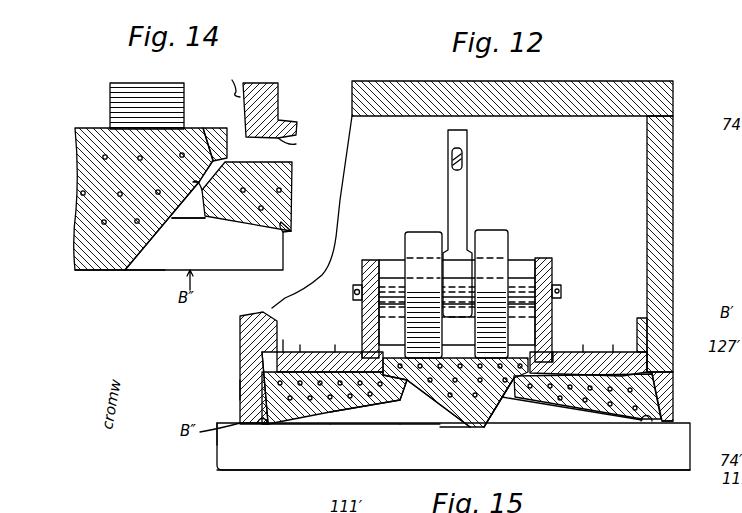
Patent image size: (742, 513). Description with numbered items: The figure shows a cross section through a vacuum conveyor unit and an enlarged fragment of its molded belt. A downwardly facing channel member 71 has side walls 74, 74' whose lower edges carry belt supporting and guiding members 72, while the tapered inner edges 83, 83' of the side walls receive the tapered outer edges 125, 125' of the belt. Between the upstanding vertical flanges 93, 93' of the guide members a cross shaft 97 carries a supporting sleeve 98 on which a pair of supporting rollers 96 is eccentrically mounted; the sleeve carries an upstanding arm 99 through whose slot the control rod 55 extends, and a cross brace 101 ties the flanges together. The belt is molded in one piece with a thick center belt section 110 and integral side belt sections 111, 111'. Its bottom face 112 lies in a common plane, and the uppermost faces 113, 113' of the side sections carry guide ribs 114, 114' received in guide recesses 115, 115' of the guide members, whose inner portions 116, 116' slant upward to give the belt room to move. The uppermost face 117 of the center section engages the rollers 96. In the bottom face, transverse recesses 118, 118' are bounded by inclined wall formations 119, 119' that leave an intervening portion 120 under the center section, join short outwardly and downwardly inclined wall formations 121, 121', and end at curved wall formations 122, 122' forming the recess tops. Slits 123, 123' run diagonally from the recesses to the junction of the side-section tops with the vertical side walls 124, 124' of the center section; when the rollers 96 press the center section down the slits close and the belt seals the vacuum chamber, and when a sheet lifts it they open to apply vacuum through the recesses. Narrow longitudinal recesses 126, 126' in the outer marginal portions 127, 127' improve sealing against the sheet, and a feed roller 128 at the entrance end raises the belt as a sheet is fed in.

In FIG. 12, the control rod 55 is at (463, 158).
In FIG. 12, the channel member 71 is at (673, 127).
In FIG. 14, the belt supporting and guiding member 72 is at (232, 80).
In FIG. 12, the belt supporting and guiding member 72 is at (617, 352).
In FIG. 12, the side wall 74 is at (673, 244).
In FIG. 12, the side wall 74' is at (241, 367).
In FIG. 12, the tapered inner edge 83 is at (678, 390).
In FIG. 12, the tapered inner edge 83' is at (236, 385).
In FIG. 14, the vertical flange 93 is at (271, 101).
In FIG. 12, the vertical flange 93 is at (557, 294).
In FIG. 12, the vertical flange 93' is at (371, 290).
In FIG. 14, the supporting roller 96 is at (118, 83).
In FIG. 12, the supporting roller 96 is at (424, 244).
In FIG. 12, the cross shaft 97 is at (561, 290).
In FIG. 12, the supporting sleeve 98 is at (520, 275).
In FIG. 12, the upstanding arm 99 is at (468, 190).
In FIG. 12, the cross brace 101 is at (394, 262).
In FIG. 14, the center belt section 110 is at (115, 268).
In FIG. 12, the center belt section 110 is at (470, 425).
In FIG. 14, the side belt section 111 is at (267, 196).
In FIG. 12, the side belt section 111 is at (587, 415).
In FIG. 12, the side belt section 111' is at (277, 439).
In FIG. 14, the bottom face 112 is at (150, 268).
In FIG. 12, the bottom face 112 is at (386, 424).
In FIG. 12, the uppermost face 113 is at (594, 332).
In FIG. 12, the uppermost face 113' is at (342, 325).
In FIG. 12, the guide rib 114 is at (681, 354).
In FIG. 12, the guide rib 114' is at (294, 325).
In FIG. 12, the guide recess 115 is at (612, 340).
In FIG. 12, the guide recess 115' is at (307, 334).
In FIG. 14, the inner cut-away portion 116 is at (304, 150).
In FIG. 12, the inner cut-away portion 116 is at (566, 344).
In FIG. 12, the inner cut-away portion 116' is at (334, 399).
In FIG. 14, the uppermost face 117 is at (93, 128).
In FIG. 12, the uppermost face 117 is at (452, 358).
In FIG. 14, the recess 118 is at (208, 238).
In FIG. 12, the recess 118 is at (519, 432).
In FIG. 12, the recess 118' is at (356, 438).
In FIG. 14, the inclined wall formation 119 is at (162, 226).
In FIG. 12, the inclined wall formation 119 is at (494, 423).
In FIG. 12, the inclined wall formation 119' is at (431, 422).
In FIG. 14, the intervening portion 120 is at (80, 270).
In FIG. 12, the intervening portion 120 is at (446, 428).
In FIG. 14, the outwardly and downwardly inclined wall formation 121 is at (202, 233).
In FIG. 12, the outwardly and downwardly inclined wall formation 121 is at (514, 417).
In FIG. 12, the outwardly and downwardly inclined wall formation 121' is at (372, 413).
In FIG. 14, the curved wall formation 122 is at (302, 238).
In FIG. 12, the curved wall formation 122 is at (572, 426).
In FIG. 12, the curved wall formation 122' is at (318, 445).
In FIG. 14, the slit 123 is at (209, 136).
In FIG. 12, the slit 123 is at (503, 402).
In FIG. 12, the slit 123' is at (418, 404).
In FIG. 14, the side wall 124 is at (211, 133).
In FIG. 12, the side wall 124 is at (566, 337).
In FIG. 12, the side wall 124' is at (346, 346).
In FIG. 12, the tapered outer edge 125 is at (690, 401).
In FIG. 12, the tapered outer edge 125' is at (221, 388).
In FIG. 12, the longitudinal recess 126 is at (644, 435).
In FIG. 12, the longitudinal recess 126' is at (270, 435).
In FIG. 12, the outer marginal portion 127 is at (455, 446).
In FIG. 12, the outer marginal portion 127' is at (207, 441).
In FIG. 12, the feed roller 128 is at (238, 470).